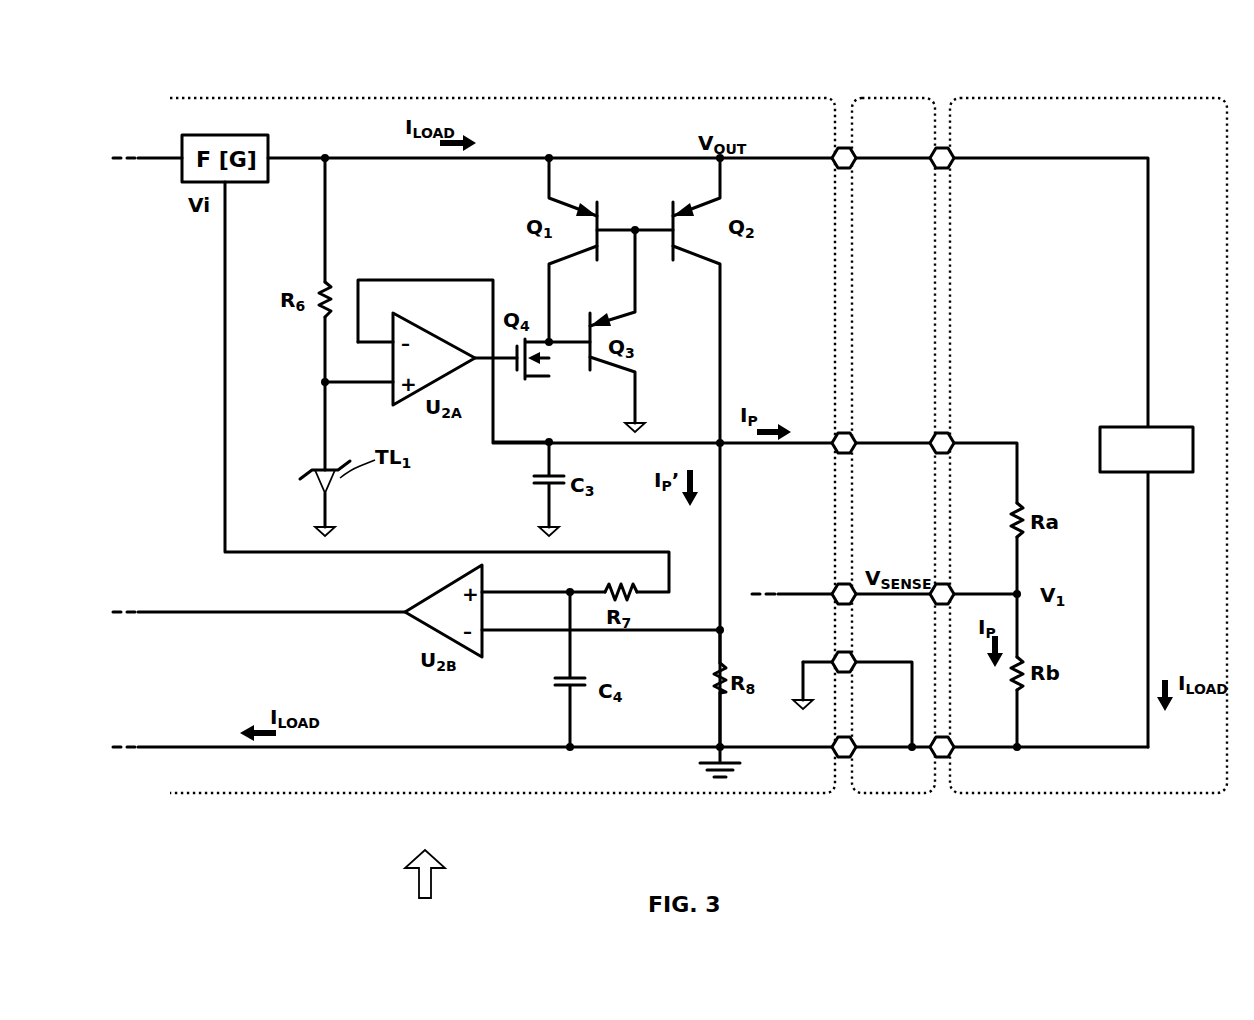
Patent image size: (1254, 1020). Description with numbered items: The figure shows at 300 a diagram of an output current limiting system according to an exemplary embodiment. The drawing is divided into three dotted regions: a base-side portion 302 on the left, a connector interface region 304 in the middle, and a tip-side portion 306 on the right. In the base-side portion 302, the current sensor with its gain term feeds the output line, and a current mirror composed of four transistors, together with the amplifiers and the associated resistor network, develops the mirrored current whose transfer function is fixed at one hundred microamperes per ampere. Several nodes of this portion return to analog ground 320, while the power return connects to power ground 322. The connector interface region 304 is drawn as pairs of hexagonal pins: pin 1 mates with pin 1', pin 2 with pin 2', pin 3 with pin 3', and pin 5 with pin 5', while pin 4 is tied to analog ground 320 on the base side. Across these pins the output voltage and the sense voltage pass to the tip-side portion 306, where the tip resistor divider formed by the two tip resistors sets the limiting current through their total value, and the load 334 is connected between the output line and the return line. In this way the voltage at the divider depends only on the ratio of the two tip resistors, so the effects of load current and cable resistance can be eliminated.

The output current limiting system 300 is at (446, 876).
The power supply portion 302 is at (522, 98).
The connector interface 304 is at (884, 98).
The load portion 306 is at (1084, 98).
The ground 320 is at (645, 426).
The earth ground 322 is at (706, 771).
The load 334 is at (1186, 427).
The pin 1 is at (828, 420).
The pin 1' is at (963, 420).
The pin 2 is at (822, 145).
The pin 2' is at (969, 145).
The pin 3 is at (827, 571).
The pin 3' is at (963, 571).
The pin 4 is at (834, 658).
The pin 5 is at (844, 790).
The pin 5' is at (944, 790).